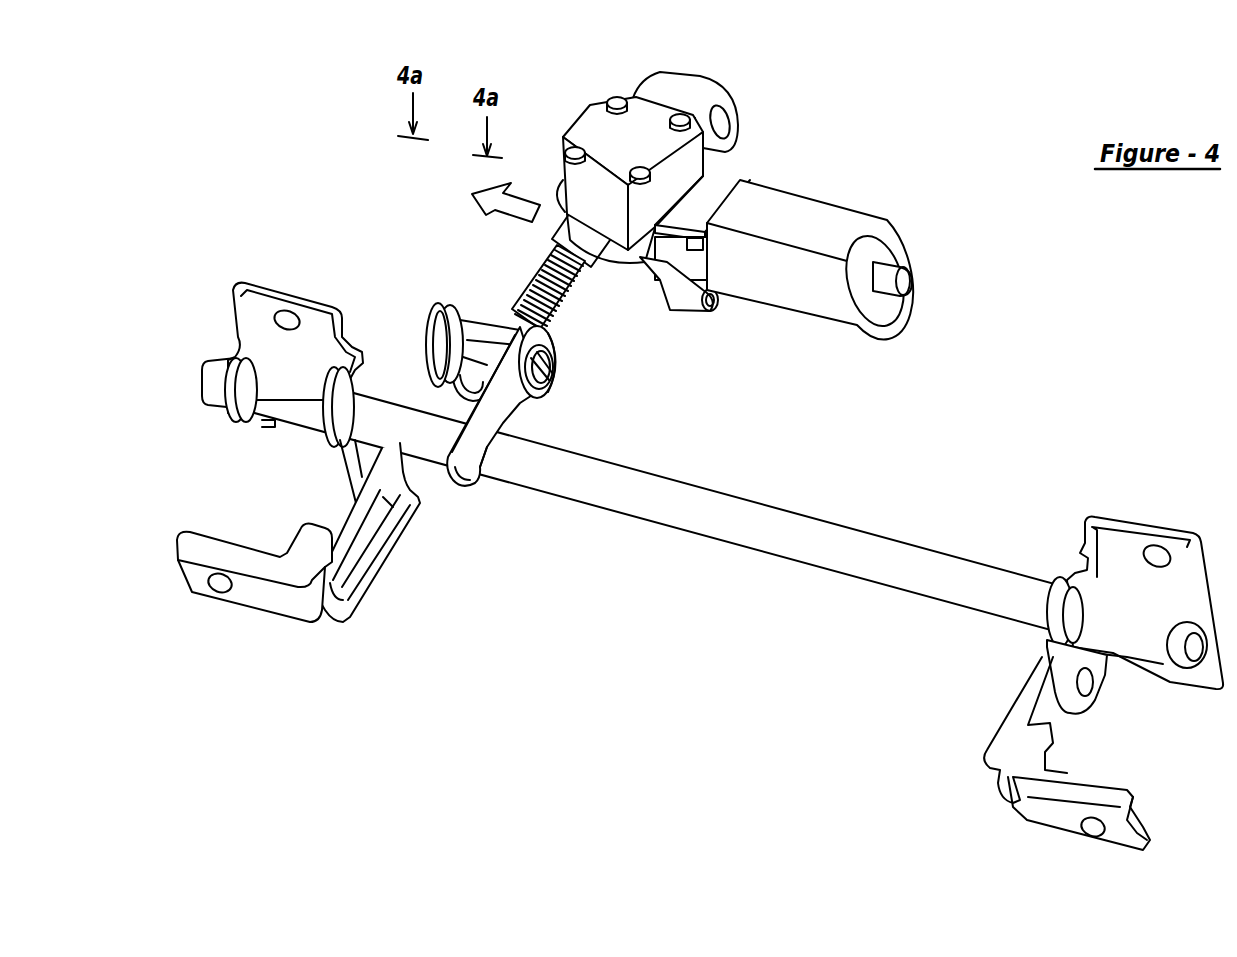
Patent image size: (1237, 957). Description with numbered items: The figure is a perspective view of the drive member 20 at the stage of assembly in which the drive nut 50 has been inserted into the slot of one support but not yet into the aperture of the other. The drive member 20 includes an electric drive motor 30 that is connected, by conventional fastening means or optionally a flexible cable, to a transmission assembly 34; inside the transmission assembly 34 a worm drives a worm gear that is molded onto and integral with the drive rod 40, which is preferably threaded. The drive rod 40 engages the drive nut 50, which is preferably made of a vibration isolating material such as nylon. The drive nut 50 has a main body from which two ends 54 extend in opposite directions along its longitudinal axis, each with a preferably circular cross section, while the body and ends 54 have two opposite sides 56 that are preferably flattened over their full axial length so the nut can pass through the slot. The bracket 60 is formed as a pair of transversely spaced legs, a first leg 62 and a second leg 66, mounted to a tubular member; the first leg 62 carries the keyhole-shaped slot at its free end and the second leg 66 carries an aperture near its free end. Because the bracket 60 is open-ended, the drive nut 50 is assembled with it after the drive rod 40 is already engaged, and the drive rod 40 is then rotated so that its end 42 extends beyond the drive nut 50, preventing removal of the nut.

The drive member 20 is at (857, 165).
The electric drive motor 30 is at (915, 232).
The transmission assembly 34 is at (692, 82).
The drive rod 40 is at (587, 277).
The end of drive rod 42 is at (445, 308).
The drive nut 50 is at (567, 355).
The ends 54 is at (553, 377).
The sides 56 is at (488, 328).
The bracket 60 is at (545, 410).
The first leg 62 is at (517, 420).
The second leg 66 is at (420, 333).